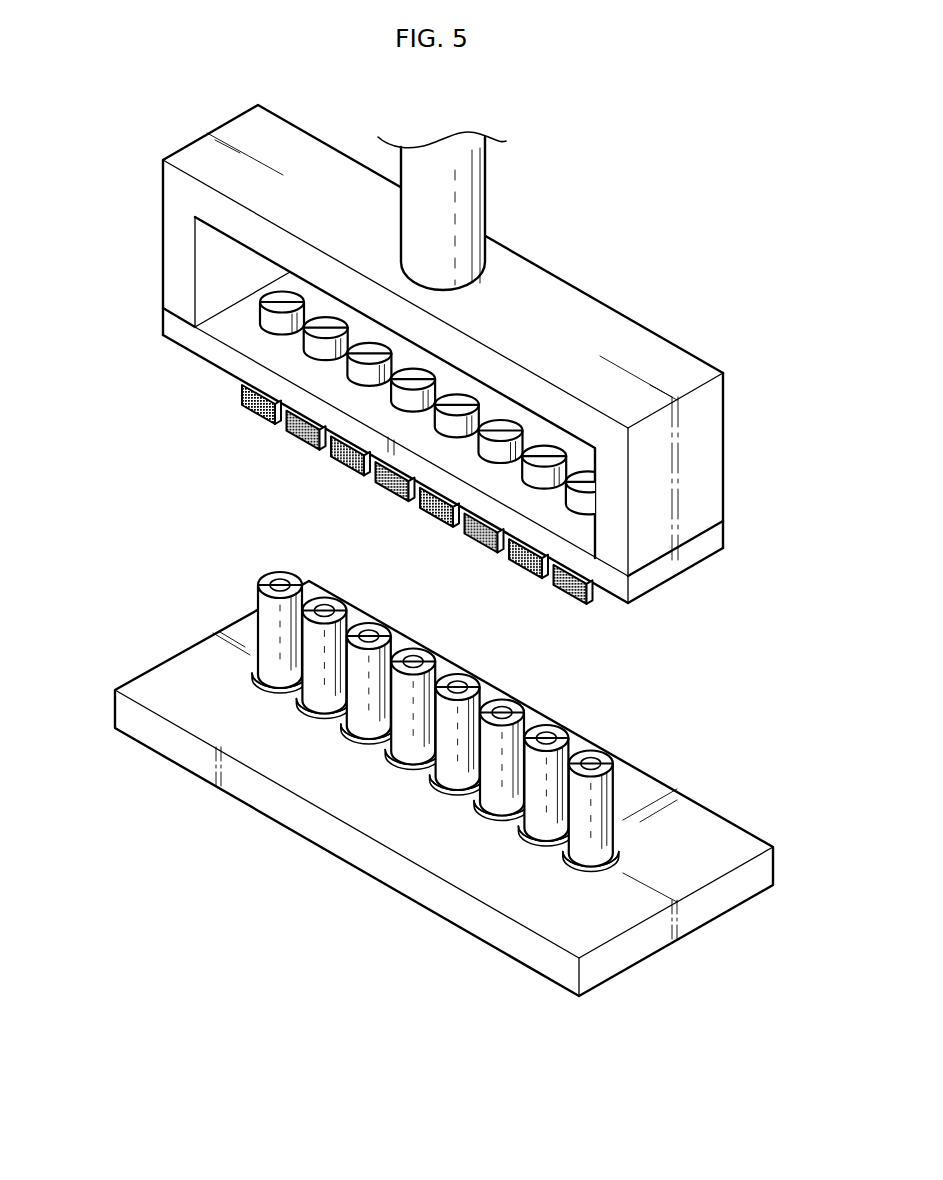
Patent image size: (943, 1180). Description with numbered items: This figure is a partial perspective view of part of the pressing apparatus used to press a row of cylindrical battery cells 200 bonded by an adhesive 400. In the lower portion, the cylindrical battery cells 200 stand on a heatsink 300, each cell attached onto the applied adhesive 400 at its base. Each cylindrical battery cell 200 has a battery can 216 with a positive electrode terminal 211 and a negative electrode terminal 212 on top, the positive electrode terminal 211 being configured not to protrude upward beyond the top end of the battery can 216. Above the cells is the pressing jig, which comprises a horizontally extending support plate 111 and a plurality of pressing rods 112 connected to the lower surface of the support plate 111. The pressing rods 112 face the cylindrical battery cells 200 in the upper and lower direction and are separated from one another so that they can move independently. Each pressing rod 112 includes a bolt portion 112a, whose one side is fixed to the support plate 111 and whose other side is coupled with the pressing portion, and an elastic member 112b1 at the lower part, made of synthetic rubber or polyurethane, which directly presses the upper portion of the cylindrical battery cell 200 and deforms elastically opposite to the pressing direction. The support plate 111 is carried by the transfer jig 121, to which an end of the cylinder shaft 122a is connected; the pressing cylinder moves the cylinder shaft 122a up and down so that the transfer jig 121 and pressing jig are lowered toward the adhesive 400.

The transfer jig 121 is at (580, 300).
The support plate 111 is at (648, 583).
The cylinder shaft 122a is at (477, 201).
The bolt portion 112a is at (272, 310).
The pressing rod 112 is at (540, 588).
The elastic member 112b1 is at (575, 597).
The heatsink 300 is at (148, 678).
The adhesive 400 is at (248, 685).
The battery can 216 is at (267, 633).
The negative electrode terminal 212 is at (262, 581).
The positive electrode terminal 211 is at (279, 581).
The cylindrical battery cell 200 is at (620, 787).